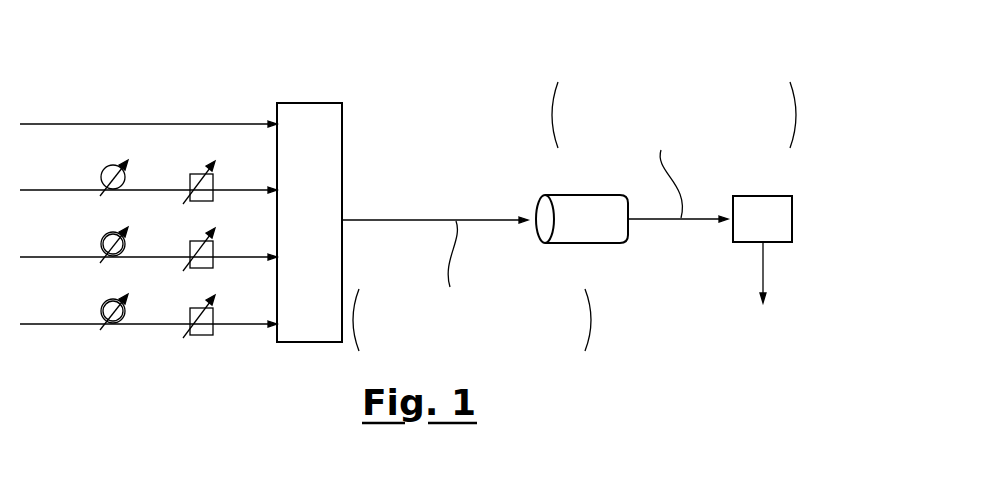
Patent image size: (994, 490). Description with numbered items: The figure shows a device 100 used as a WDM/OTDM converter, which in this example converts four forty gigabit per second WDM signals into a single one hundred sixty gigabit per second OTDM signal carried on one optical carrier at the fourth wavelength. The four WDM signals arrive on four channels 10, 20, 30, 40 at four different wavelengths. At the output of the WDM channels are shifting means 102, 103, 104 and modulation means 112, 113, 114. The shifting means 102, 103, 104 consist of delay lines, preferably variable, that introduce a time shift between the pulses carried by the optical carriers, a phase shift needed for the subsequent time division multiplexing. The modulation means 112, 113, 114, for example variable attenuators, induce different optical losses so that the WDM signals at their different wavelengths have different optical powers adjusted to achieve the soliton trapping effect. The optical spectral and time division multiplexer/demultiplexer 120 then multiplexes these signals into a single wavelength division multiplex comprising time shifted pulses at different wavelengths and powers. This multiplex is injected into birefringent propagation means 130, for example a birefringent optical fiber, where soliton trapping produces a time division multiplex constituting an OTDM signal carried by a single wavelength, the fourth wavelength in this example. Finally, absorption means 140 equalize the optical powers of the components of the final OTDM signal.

The device 100 is at (468, 100).
The channel 10 is at (148, 108).
The channel 20 is at (148, 174).
The channel 30 is at (148, 241).
The channel 40 is at (148, 308).
The shifting means 102 is at (136, 173).
The shifting means 103 is at (136, 240).
The shifting means 104 is at (136, 307).
The modulation means 112 is at (220, 177).
The modulation means 113 is at (220, 244).
The modulation means 114 is at (220, 311).
The optical spectral and time division multiplexer/demultiplexer 120 is at (309, 222).
The birefringent propagation means 130 is at (582, 219).
The absorption means 140 is at (762, 249).